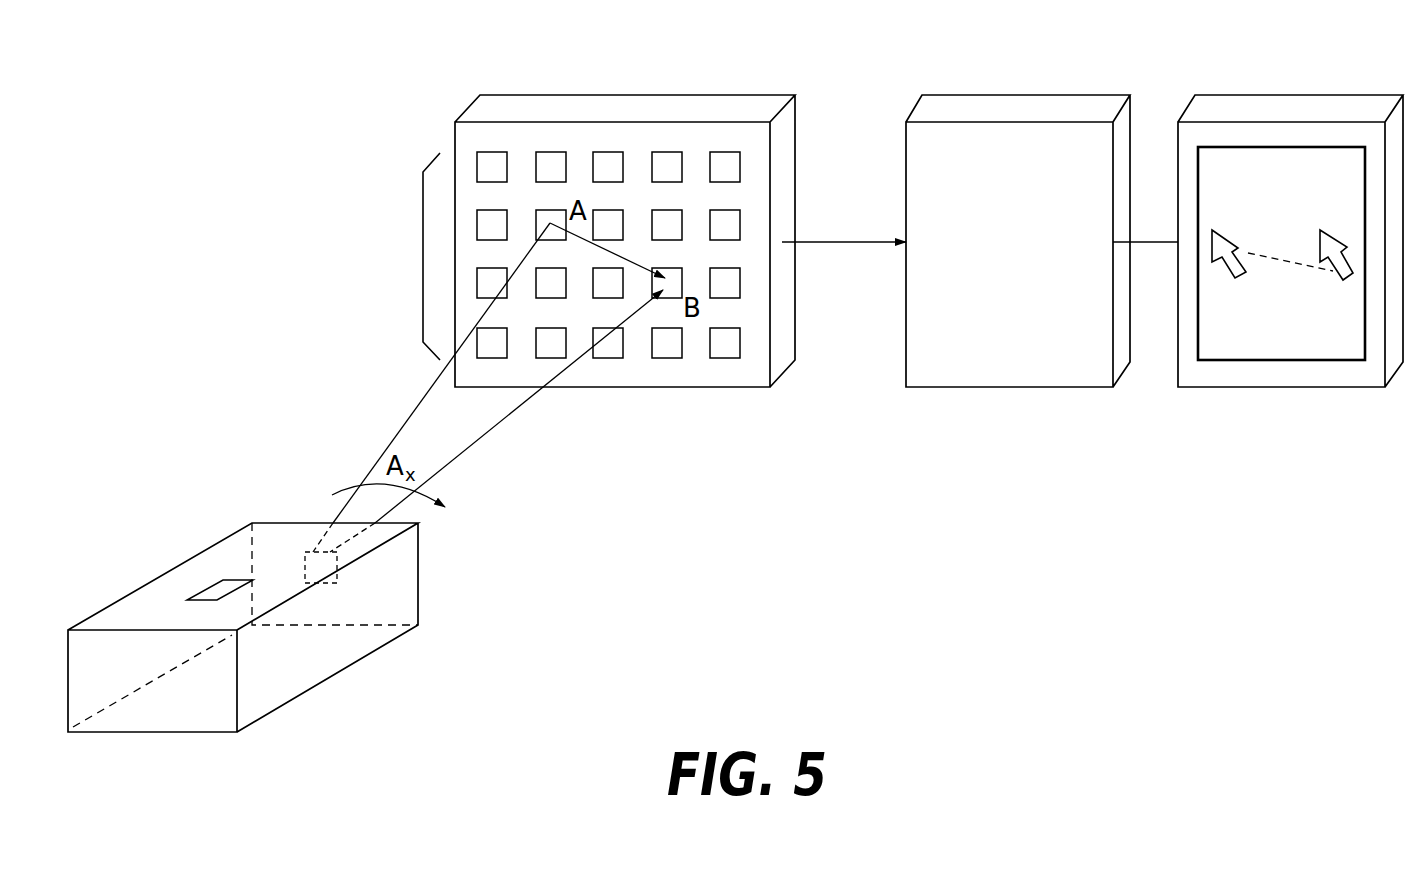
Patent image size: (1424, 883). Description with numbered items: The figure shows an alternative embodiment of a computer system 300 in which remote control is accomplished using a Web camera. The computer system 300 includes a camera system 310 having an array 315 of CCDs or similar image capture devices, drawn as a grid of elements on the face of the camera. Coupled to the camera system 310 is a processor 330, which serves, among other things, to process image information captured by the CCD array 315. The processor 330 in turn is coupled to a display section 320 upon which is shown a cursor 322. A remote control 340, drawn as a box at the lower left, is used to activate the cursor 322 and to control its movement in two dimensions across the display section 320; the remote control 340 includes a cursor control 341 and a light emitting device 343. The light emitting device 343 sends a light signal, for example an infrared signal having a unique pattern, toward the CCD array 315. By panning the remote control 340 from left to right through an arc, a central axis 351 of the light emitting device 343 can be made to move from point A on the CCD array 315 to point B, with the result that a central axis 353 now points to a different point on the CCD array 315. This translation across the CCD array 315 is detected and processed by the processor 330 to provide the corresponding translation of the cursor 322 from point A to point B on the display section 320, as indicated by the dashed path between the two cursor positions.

The computer system 300 is at (952, 527).
The camera system 310 is at (702, 107).
The CCD array 315 is at (423, 258).
The display section 320 is at (1292, 110).
The cursor 322 is at (1230, 272).
The processor 330 is at (1025, 110).
The remote control 340 is at (370, 637).
The cursor control 341 is at (222, 583).
The light emitting device 343 is at (318, 557).
The central axis 351 is at (410, 420).
The central axis 353 is at (472, 445).